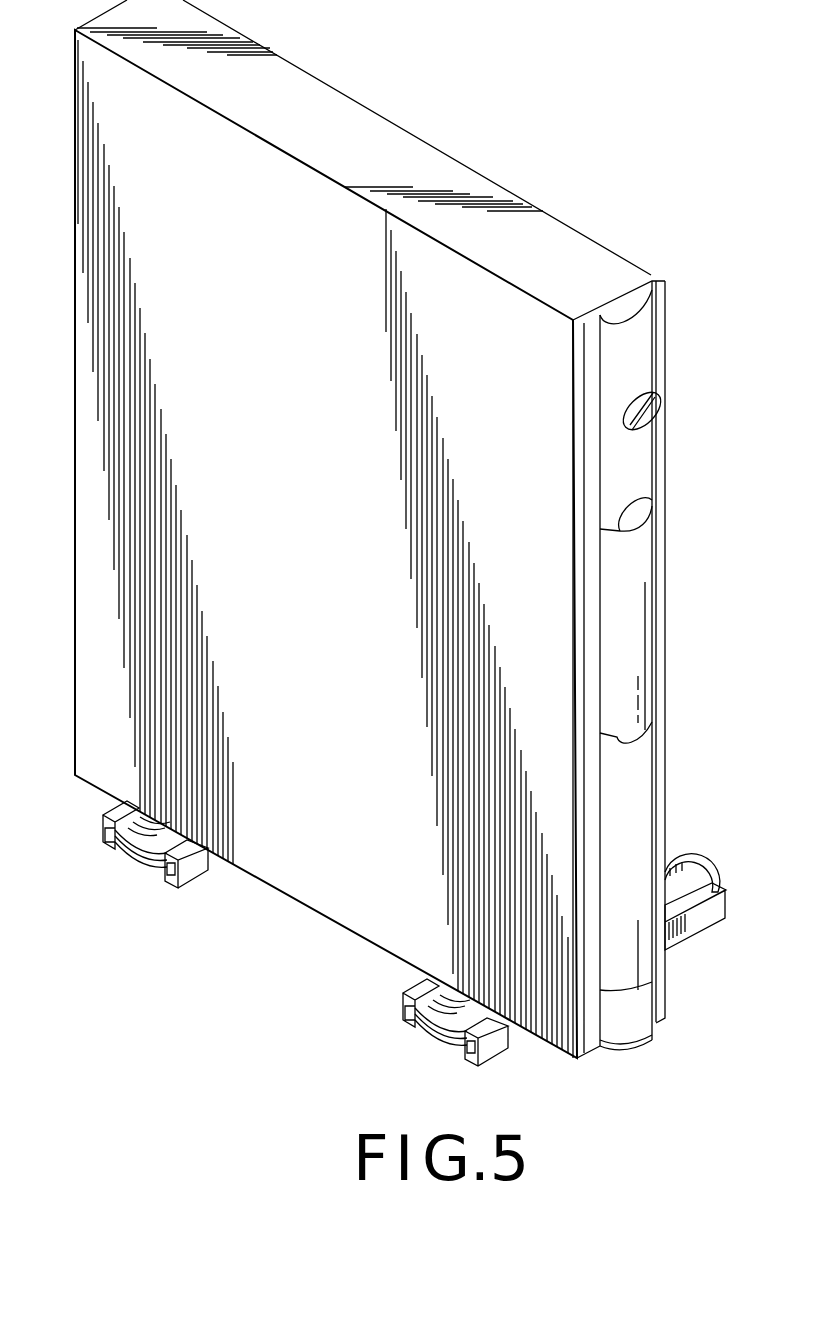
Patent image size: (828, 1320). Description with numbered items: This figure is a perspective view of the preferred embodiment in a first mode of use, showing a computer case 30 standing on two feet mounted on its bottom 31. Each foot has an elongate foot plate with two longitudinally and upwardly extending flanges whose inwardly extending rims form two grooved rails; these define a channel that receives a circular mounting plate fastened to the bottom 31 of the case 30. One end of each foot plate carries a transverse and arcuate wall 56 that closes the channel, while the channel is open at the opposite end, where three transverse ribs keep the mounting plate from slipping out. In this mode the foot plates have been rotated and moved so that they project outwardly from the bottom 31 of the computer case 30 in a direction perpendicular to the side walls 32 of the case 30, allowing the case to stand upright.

The computer case 30 is at (85, 778).
The bottom 31 is at (548, 1043).
The side walls 32 is at (330, 895).
The transverse and arcuate wall 56 is at (700, 862).